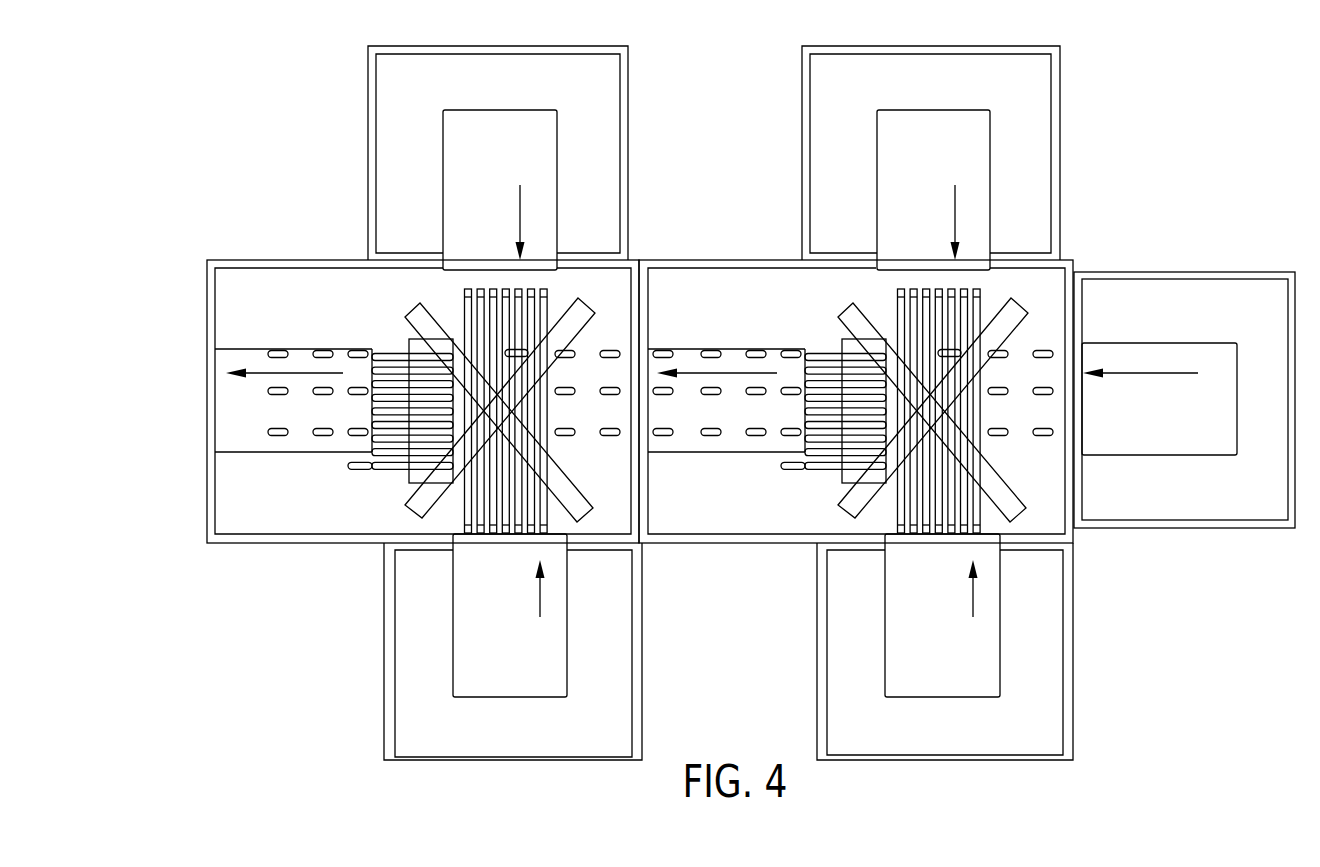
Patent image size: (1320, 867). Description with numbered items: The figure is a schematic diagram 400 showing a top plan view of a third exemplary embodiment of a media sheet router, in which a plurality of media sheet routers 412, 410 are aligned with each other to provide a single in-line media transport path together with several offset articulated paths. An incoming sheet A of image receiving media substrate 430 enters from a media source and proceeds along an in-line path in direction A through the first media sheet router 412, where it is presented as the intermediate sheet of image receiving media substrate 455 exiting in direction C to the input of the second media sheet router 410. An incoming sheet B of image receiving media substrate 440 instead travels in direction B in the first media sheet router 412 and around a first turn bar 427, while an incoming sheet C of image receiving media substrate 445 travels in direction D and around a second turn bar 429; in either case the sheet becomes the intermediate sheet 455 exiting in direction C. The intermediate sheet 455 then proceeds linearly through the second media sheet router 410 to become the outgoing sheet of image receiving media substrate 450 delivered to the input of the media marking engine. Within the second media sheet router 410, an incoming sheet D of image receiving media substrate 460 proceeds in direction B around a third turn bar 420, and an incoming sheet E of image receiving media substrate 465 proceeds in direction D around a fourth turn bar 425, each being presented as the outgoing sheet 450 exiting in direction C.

The schematic diagram 400 is at (296, 144).
The second media sheet router 410 is at (293, 283).
The first media sheet router 412 is at (856, 379).
The third turn bar 420 is at (434, 321).
The fourth turn bar 425 is at (560, 320).
The first turn bar 427 is at (922, 369).
The second turn bar 429 is at (939, 368).
The incoming sheet A of image receiving media substrate 430 is at (1217, 430).
The incoming sheet B of image receiving media substrate 440 is at (945, 647).
The incoming sheet C of image receiving media substrate 445 is at (931, 158).
The outgoing sheet of image receiving media substrate 450 is at (285, 442).
The intermediate sheet of image receiving media substrate 455 is at (726, 426).
The incoming sheet D of image receiving media substrate 460 is at (543, 682).
The incoming sheet E of image receiving media substrate 465 is at (480, 119).